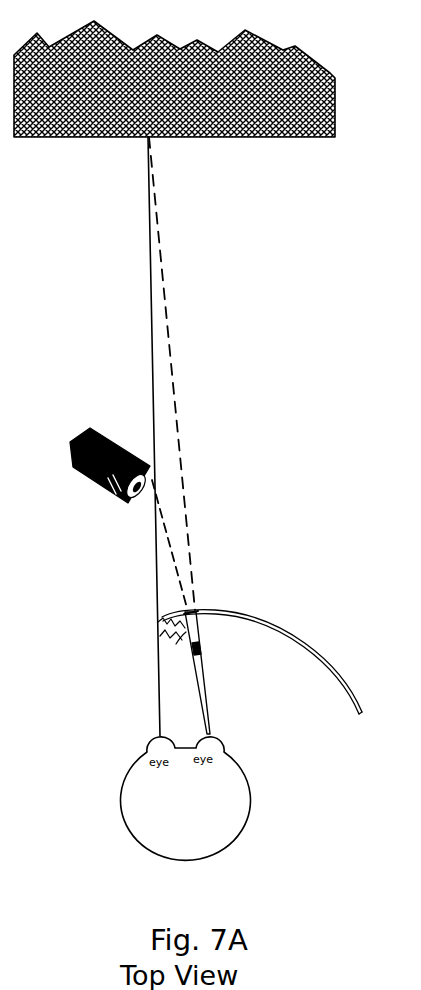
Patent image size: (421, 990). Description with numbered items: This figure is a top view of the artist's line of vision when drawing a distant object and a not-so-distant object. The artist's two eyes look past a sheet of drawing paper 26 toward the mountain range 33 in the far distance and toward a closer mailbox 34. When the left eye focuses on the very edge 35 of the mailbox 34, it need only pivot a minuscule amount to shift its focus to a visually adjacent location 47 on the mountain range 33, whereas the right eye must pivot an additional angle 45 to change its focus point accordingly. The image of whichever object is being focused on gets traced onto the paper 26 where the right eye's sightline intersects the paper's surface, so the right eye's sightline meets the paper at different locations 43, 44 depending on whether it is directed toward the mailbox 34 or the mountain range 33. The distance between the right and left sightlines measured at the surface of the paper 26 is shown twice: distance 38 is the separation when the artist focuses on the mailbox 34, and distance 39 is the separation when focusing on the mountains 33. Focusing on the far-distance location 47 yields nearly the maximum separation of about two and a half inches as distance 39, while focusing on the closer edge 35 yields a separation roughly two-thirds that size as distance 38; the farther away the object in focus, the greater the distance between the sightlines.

The drawing paper 26 is at (333, 657).
The mountain range 33 is at (308, 137).
The mailbox 34 is at (92, 428).
The edge of the mailbox 35 is at (147, 459).
The distance between the sightlines 38 is at (180, 627).
The distance between the sightlines 39 is at (185, 633).
The location where the right eye's sightline intersects the paper's surface 43 is at (204, 609).
The location where the right eye's sightline intersects the paper's surface 44 is at (189, 609).
The additional angle 45 is at (200, 651).
The location on the mountain range 47 is at (143, 140).